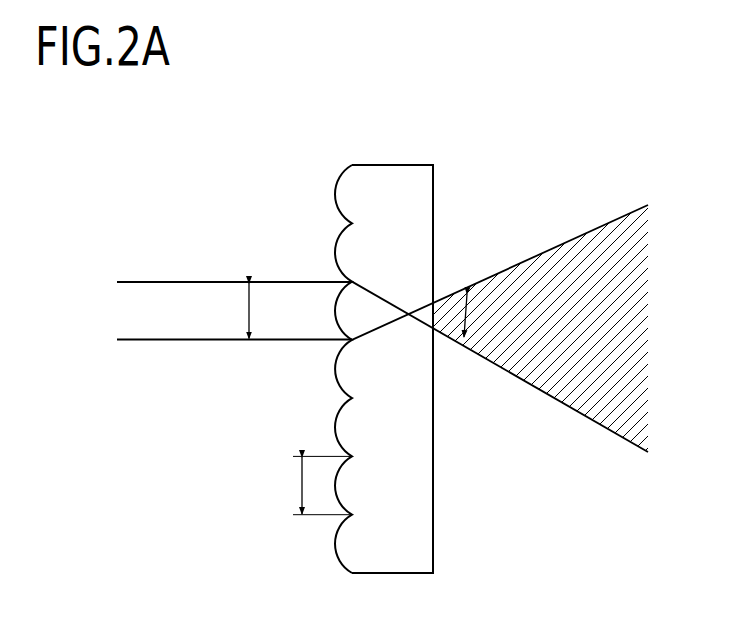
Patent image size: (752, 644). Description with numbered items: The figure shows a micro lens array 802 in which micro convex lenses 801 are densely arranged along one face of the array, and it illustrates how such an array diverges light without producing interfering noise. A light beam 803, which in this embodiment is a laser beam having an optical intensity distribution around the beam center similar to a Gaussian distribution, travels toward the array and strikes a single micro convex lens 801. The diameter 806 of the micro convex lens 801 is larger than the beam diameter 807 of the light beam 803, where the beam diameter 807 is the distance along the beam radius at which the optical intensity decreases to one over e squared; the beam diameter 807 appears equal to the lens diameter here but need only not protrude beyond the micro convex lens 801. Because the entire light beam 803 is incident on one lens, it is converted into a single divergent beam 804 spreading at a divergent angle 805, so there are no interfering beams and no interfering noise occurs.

The micro convex lens 801 is at (336, 258).
The micro lens array 802 is at (391, 165).
The light beam 803 is at (160, 339).
The divergent beam 804 is at (568, 241).
The divergent angle 805 is at (470, 295).
The diameter of the micro convex lens 806 is at (296, 489).
The beam diameter 807 is at (244, 322).